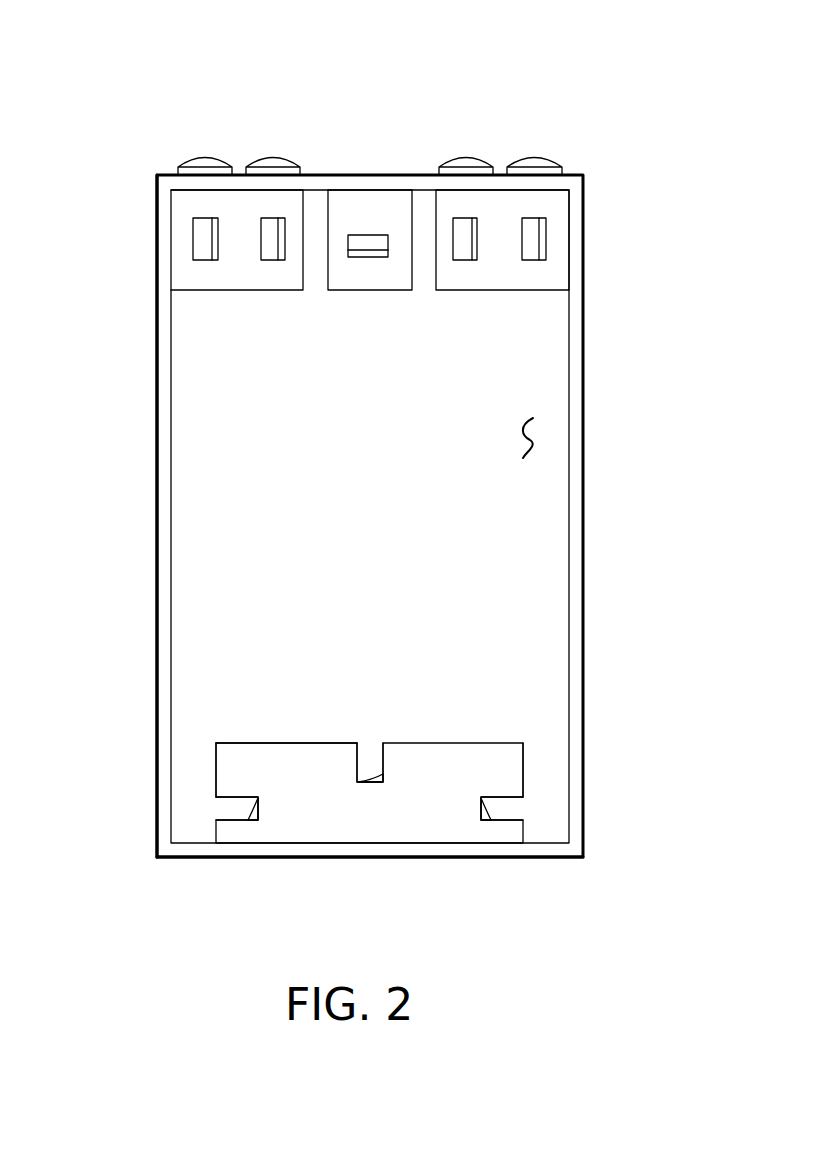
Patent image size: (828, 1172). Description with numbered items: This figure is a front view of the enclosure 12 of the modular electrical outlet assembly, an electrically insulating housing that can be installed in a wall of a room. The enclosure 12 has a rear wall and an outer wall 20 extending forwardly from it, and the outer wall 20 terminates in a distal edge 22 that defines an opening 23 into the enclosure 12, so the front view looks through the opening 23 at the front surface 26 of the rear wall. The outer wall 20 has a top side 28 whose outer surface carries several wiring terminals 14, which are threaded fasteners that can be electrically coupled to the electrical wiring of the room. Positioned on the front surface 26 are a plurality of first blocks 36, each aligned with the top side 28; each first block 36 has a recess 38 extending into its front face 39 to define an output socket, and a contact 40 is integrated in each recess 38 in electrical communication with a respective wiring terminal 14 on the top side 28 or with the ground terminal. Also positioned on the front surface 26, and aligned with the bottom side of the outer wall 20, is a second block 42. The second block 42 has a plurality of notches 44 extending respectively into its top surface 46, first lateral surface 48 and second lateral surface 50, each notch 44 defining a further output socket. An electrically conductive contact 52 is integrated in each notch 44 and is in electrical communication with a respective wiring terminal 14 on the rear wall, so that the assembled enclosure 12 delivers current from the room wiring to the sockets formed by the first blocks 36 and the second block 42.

The enclosure 12 is at (157, 175).
The wiring terminals 14 is at (272, 157).
The outer wall 20 is at (157, 590).
The distal edge 22 is at (190, 850).
The opening 23 is at (237, 616).
The front surface 26 is at (530, 440).
The top side 28 is at (370, 175).
The first blocks 36 is at (370, 290).
The recess 38 is at (372, 236).
The front face 39 is at (345, 205).
The contact 40 is at (208, 237).
The second block 42 is at (500, 742).
The notches 44 is at (369, 740).
The top surface 46 is at (216, 744).
The first lateral surface 48 is at (216, 770).
The second lateral surface 50 is at (523, 768).
The contact 52 is at (252, 805).